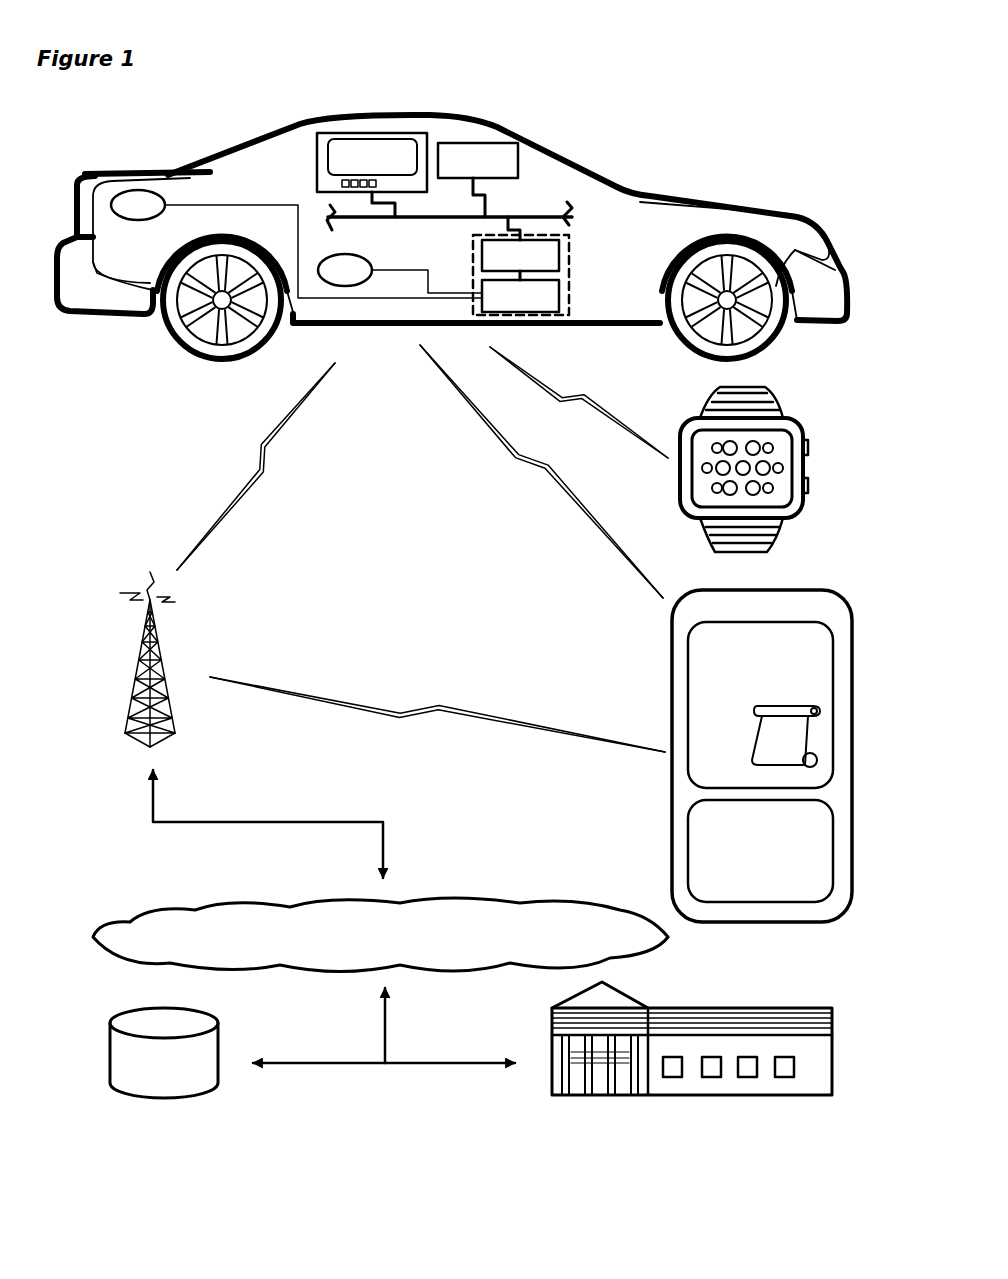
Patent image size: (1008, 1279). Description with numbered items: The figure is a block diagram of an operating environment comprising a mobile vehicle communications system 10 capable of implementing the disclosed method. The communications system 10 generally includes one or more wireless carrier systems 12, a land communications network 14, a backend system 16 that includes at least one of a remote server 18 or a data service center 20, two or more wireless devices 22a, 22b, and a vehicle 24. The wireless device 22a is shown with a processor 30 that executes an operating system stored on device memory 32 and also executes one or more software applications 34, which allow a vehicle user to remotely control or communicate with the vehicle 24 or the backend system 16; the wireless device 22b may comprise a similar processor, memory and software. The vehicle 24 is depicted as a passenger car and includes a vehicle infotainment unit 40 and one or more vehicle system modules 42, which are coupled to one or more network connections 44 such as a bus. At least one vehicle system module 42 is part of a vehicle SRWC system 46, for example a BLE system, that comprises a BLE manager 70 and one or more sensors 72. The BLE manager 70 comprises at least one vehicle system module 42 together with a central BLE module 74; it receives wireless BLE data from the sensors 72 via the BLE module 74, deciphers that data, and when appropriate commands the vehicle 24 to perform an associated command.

The mobile vehicle communications system 10 is at (508, 78).
The wireless carrier system 12 is at (135, 674).
The land communications network 14 is at (380, 935).
The backend system 16 is at (521, 1090).
The remote server 18 is at (147, 1023).
The data service center 20 is at (552, 1030).
The wireless device 22a is at (762, 740).
The wireless device 22b is at (823, 416).
The vehicle 24 is at (624, 181).
The processor 30 is at (752, 868).
The device memory 32 is at (752, 658).
The software application 34 is at (772, 752).
The vehicle infotainment unit 40 is at (361, 169).
The vehicle system module 42 is at (467, 171).
The network connection 44 is at (537, 211).
The vehicle SRWC system 46 is at (460, 243).
The BLE manager 70 is at (473, 258).
The sensor 72 is at (127, 216).
The central BLE module 74 is at (509, 307).